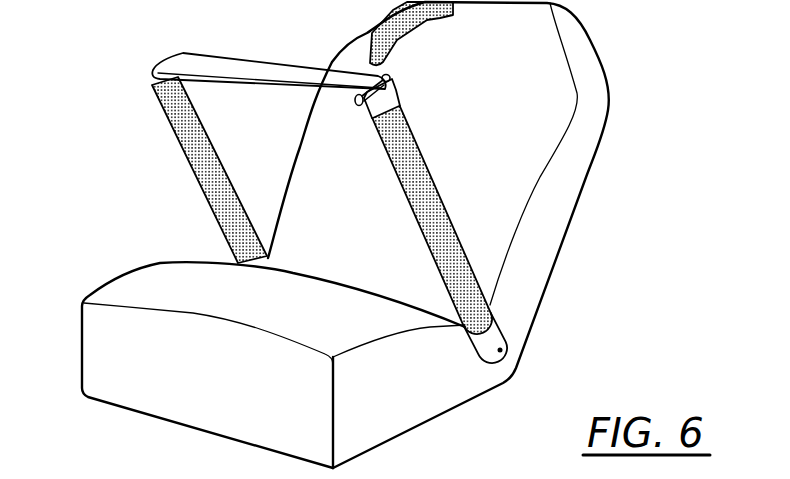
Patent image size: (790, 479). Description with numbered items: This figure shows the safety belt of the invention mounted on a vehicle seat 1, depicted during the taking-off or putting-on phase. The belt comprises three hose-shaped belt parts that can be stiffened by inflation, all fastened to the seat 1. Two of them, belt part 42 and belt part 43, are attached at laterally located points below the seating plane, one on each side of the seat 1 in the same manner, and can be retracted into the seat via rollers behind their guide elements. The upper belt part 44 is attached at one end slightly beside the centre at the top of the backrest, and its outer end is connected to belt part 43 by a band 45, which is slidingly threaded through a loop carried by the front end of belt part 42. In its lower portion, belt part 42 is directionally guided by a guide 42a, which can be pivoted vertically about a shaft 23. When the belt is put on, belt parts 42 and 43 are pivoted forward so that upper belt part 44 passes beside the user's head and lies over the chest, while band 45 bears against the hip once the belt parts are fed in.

The seat 1 is at (533, 83).
The shaft 23 is at (502, 351).
The belt part 42 is at (460, 257).
The guide 42a is at (500, 337).
The belt part 43 is at (210, 174).
The upper belt part 44 is at (402, 25).
The band 45 is at (278, 72).